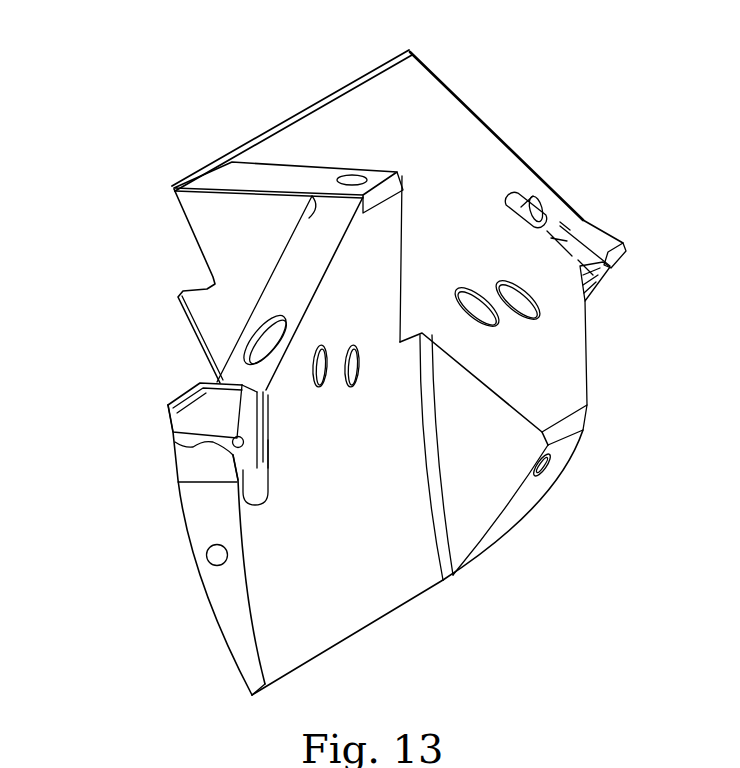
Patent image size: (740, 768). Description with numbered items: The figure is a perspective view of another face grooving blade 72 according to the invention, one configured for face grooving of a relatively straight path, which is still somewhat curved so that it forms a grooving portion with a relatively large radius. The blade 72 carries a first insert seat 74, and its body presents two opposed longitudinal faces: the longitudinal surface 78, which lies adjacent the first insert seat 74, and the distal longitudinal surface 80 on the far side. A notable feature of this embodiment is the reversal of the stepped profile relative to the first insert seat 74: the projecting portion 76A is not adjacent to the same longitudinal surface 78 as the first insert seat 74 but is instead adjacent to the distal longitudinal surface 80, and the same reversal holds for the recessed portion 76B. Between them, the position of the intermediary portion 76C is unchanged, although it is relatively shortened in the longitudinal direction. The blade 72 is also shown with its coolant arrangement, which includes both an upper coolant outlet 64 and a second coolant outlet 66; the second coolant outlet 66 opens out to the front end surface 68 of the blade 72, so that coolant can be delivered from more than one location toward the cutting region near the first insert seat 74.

The blade 72 is at (195, 87).
The first insert seat 74 is at (257, 491).
The projecting portion 76A is at (482, 473).
The recessed portion 76B is at (377, 166).
The intermediary portion 76C is at (409, 335).
The longitudinal surface 78 is at (295, 262).
The upper coolant outlet 64 is at (273, 353).
The second coolant outlet 66 is at (227, 553).
The front end surface 68 is at (236, 612).
The distal longitudinal surface 80 is at (373, 622).